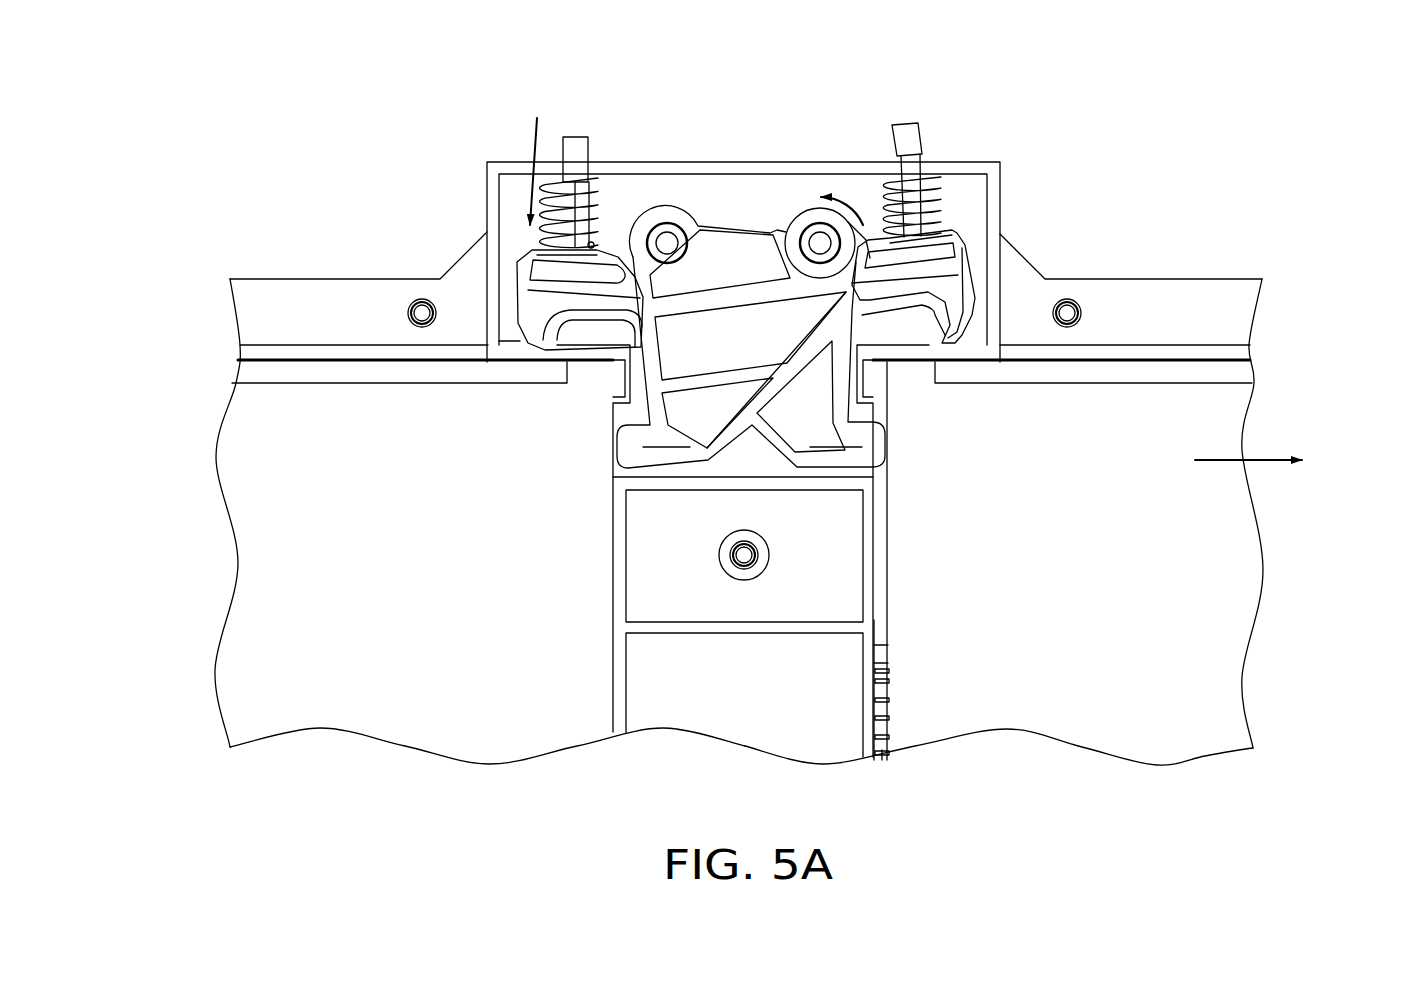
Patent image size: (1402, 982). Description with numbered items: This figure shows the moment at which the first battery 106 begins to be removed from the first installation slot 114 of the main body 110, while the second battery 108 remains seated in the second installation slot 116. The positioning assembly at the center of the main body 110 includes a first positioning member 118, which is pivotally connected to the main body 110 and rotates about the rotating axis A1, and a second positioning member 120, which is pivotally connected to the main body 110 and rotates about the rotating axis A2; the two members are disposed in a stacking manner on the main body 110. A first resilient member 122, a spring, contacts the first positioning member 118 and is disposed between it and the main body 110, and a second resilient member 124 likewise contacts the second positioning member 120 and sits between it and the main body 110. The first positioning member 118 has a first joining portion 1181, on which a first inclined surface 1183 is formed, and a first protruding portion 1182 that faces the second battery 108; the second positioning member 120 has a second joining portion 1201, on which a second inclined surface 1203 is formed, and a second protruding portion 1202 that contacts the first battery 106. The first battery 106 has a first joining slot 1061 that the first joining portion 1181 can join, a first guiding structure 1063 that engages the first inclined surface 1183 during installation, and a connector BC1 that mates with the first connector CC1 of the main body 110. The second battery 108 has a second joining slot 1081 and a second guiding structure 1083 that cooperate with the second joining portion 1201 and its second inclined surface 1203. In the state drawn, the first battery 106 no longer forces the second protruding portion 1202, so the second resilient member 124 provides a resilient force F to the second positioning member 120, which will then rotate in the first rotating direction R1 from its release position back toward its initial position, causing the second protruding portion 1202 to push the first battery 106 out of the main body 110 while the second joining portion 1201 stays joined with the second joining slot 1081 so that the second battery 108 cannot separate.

The first battery 106 is at (1223, 568).
The second battery 108 is at (297, 567).
The main body 110 is at (1225, 312).
The first installation slot 114 is at (1126, 366).
The second installation slot 116 is at (351, 366).
The first positioning member 118 is at (736, 222).
The second positioning member 120 is at (526, 253).
The first resilient member 122 is at (922, 178).
The second resilient member 124 is at (567, 178).
The first joining slot 1061 is at (1168, 377).
The first guiding structure 1063 is at (856, 395).
The second joining slot 1081 is at (258, 375).
The second guiding structure 1083 is at (590, 333).
The first joining portion 1181 is at (956, 305).
The first protruding portion 1182 is at (643, 447).
The first inclined surface 1183 is at (978, 330).
The second joining portion 1201 is at (536, 323).
The second protruding portion 1202 is at (847, 447).
The second inclined surface 1203 is at (487, 337).
The rotating axis A1 is at (667, 240).
The rotating axis A2 is at (820, 240).
The first rotating direction R1 is at (850, 212).
The resilient force F is at (537, 154).
The connector BC1 is at (882, 706).
The first connector CC1 is at (882, 757).